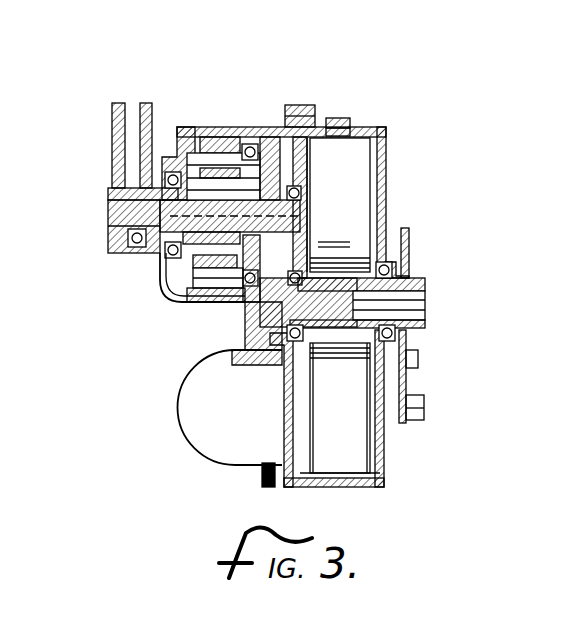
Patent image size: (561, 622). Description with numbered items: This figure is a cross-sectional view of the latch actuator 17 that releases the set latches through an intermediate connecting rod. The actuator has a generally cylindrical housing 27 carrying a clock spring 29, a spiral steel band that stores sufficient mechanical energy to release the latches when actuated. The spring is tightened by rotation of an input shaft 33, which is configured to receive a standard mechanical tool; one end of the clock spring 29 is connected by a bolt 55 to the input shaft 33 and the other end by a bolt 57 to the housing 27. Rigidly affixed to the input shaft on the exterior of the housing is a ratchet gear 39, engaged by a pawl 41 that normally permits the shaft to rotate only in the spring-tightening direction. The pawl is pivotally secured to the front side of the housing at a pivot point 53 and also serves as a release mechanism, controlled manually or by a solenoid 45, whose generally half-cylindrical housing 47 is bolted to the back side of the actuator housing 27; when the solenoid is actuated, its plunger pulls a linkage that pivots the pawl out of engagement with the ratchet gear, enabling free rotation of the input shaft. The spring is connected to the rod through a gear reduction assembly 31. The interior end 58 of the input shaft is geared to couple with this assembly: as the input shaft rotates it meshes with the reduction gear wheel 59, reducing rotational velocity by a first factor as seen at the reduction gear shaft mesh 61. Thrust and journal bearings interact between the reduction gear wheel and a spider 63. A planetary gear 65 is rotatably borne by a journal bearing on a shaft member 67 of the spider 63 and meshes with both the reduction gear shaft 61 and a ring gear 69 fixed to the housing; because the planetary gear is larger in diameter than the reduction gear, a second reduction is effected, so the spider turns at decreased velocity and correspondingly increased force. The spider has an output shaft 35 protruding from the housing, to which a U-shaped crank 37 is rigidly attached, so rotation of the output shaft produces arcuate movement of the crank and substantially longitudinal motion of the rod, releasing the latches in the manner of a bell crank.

The motor assembly 17 is at (259, 80).
The housing 27 is at (388, 482).
The clock spring 29 is at (343, 257).
The gear reduction assembly 31 is at (296, 140).
The input shaft 33 is at (428, 288).
The output shaft 35 is at (108, 222).
The U-shaped crank 37 is at (150, 100).
The ratchet gear 39 is at (420, 340).
The pawl 41 is at (420, 395).
The solenoid 45 is at (220, 392).
The half-cylindrical housing 47 is at (195, 450).
The pivot point 53 is at (415, 362).
The bolt 55 is at (345, 342).
The bolt 57 is at (348, 125).
The interior end 58 is at (255, 320).
The reduction gear wheel 59 is at (185, 277).
The reduction gear shaft mesh 61 is at (130, 257).
The spider 63 is at (110, 236).
The planetary gear 65 is at (205, 135).
The shaft member 67 is at (195, 153).
The ring gear 69 is at (221, 140).